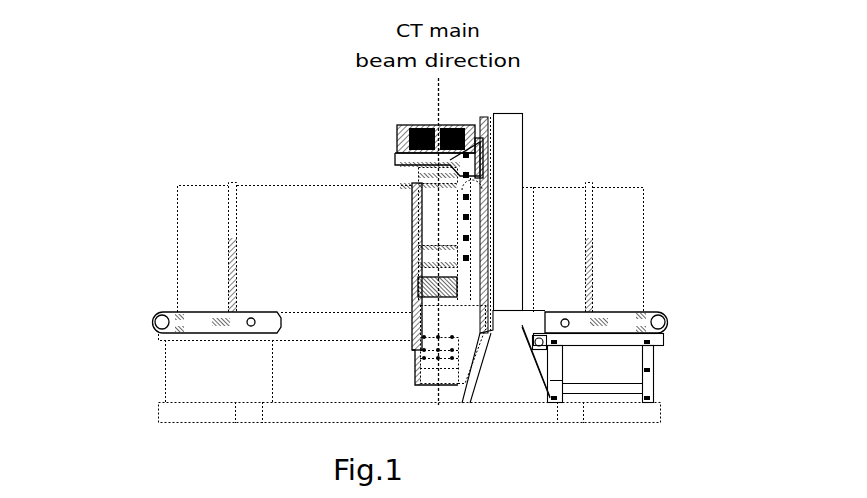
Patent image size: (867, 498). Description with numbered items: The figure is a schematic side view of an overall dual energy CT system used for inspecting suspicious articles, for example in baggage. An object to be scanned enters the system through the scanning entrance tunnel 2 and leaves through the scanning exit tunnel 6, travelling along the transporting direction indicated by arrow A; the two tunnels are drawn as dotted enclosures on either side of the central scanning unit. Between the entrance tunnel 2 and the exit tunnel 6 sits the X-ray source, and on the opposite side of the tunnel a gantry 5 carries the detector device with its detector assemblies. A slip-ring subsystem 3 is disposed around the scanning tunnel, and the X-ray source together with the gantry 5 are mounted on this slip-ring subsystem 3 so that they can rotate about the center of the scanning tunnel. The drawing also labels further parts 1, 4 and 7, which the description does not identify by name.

The conveying device 1 is at (618, 323).
The scanning entrance tunnel 2 is at (617, 250).
The slip-ring subsystem 3 is at (507, 235).
The radiation source 4 is at (400, 143).
The gantry 5 is at (432, 230).
The scanning exit tunnel 6 is at (312, 278).
The base 7 is at (190, 413).